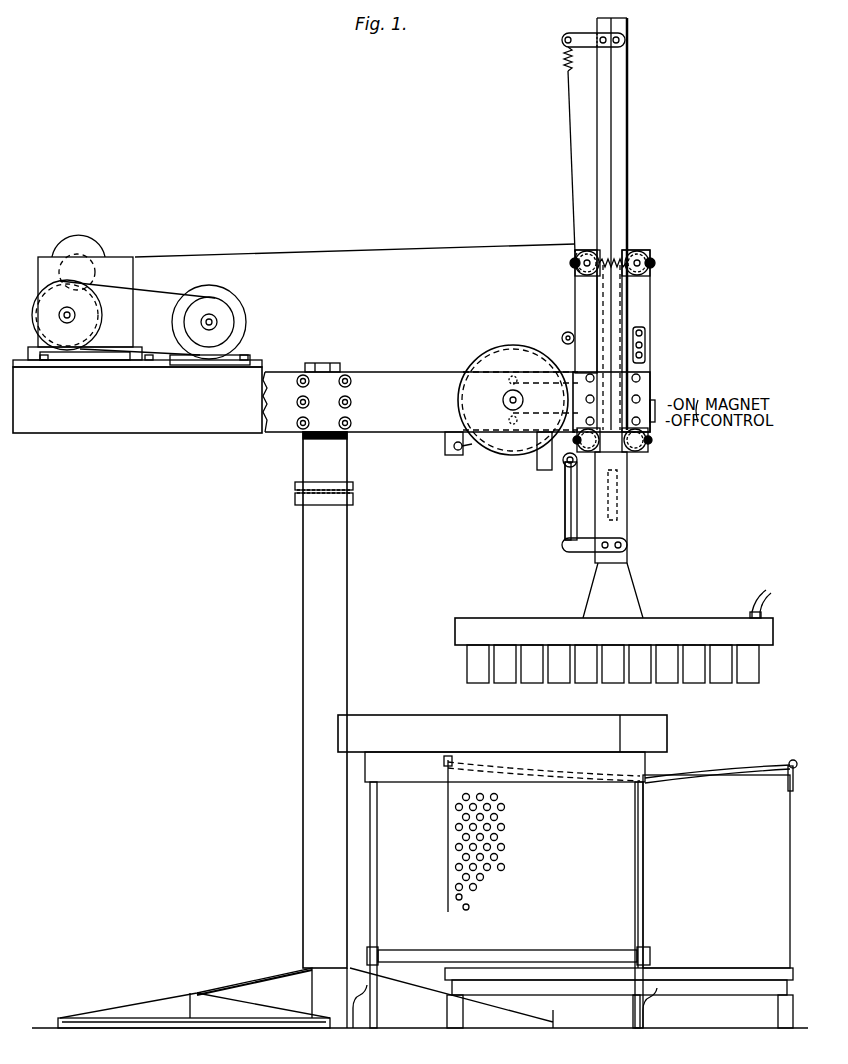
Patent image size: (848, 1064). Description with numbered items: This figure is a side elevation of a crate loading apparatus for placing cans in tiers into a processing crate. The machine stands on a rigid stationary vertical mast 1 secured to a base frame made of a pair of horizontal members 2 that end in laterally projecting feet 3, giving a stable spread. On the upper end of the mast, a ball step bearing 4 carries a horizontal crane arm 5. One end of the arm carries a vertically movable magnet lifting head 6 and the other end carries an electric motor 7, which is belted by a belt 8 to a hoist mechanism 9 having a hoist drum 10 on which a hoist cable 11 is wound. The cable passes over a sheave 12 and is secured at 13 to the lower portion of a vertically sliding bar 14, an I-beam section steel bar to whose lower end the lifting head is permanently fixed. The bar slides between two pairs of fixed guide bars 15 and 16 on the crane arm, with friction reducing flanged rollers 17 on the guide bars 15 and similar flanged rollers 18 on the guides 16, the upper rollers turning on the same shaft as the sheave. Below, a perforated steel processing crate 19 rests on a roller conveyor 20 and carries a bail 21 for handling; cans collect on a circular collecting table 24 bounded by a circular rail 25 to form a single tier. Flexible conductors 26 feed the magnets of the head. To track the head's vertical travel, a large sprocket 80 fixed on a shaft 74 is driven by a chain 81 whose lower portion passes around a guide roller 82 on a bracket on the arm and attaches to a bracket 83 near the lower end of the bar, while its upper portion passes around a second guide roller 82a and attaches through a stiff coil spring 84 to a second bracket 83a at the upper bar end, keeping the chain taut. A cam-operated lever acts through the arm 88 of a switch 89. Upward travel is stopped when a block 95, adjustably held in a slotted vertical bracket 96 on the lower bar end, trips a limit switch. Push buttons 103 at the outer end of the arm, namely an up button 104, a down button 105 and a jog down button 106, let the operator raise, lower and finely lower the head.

The vertical mast 1 is at (305, 568).
The horizontal members 2 is at (240, 975).
The feet 3 is at (118, 1012).
The ball step bearing 4 is at (293, 492).
The crane arm 5 is at (372, 372).
The magnet lifting head 6 is at (700, 630).
The electric motor 7 is at (238, 308).
The belt 8 is at (150, 291).
The hoist mechanism 9 is at (58, 257).
The hoist drum 10 is at (95, 262).
The hoist cable 11 is at (322, 256).
The sheave 12 is at (578, 255).
The cable attachment 13 is at (622, 510).
The vertically sliding bar 14 is at (625, 120).
The guide bars 15 is at (648, 292).
The guide bars 16 is at (582, 297).
The flanged rollers 17 is at (583, 250).
The flanged rollers 18 is at (652, 258).
The processing crate 19 is at (446, 845).
The roller conveyor 20 is at (700, 995).
The bail 21 is at (708, 776).
The collecting table 24 is at (440, 763).
The circular rail 25 is at (400, 714).
The flexible conductors 26 is at (768, 588).
The shaft 74 is at (503, 400).
The sprocket 80 is at (496, 352).
The chain 81 is at (567, 136).
The guide roller 82 is at (562, 463).
The second guide roller 82a is at (561, 338).
The bracket 83 is at (582, 552).
The second bracket 83a is at (585, 33).
The coil spring 84 is at (562, 62).
The switch arm 88 is at (460, 450).
The switch 89 is at (450, 455).
The block 95 is at (565, 482).
The slotted vertical bracket 96 is at (566, 520).
The push button station 103 is at (647, 330).
The up button 104 is at (645, 333).
The down button 105 is at (645, 345).
The jog down button 106 is at (645, 357).